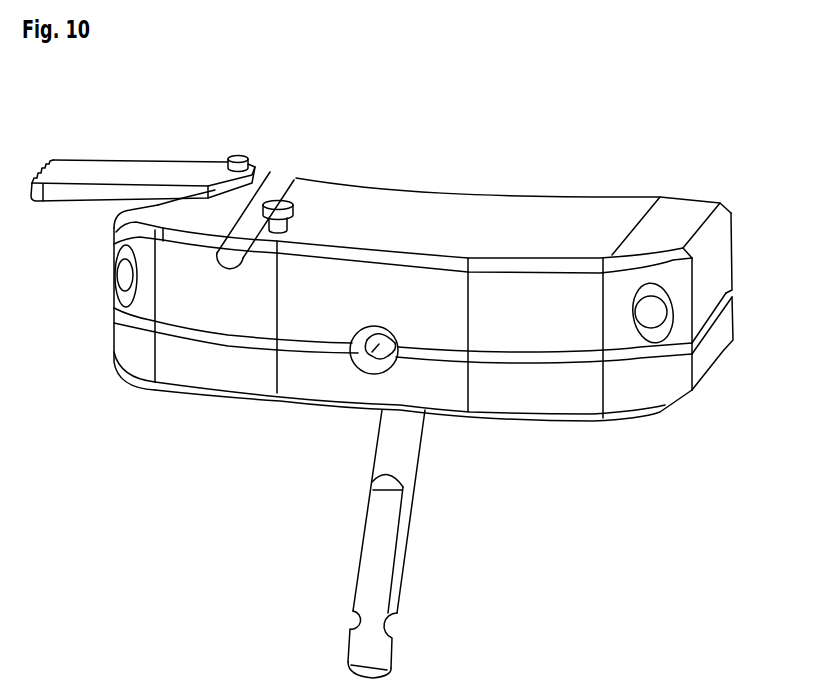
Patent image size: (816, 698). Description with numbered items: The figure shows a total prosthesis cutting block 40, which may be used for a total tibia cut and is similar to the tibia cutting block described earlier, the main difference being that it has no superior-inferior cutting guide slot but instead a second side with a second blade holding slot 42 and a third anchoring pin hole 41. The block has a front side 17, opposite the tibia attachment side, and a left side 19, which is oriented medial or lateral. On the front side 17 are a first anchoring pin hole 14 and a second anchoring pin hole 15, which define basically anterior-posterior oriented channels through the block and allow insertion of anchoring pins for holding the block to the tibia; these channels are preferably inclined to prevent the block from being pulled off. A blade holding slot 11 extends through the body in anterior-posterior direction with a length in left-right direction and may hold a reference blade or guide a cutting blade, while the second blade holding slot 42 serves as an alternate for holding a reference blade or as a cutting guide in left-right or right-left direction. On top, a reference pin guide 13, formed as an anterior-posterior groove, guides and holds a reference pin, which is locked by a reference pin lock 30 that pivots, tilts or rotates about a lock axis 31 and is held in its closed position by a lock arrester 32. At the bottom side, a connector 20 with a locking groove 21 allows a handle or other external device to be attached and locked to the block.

The blade holding slot 11 is at (228, 335).
The reference pin guide 13 is at (285, 197).
The first anchoring pin hole 14 is at (370, 377).
The second anchoring pin hole 15 is at (122, 277).
The front side 17 is at (338, 310).
The left side 19 is at (717, 268).
The connector 20 is at (421, 544).
The locking groove 21 is at (398, 630).
The reference pin lock 30 is at (107, 177).
The lock axis 31 is at (237, 155).
The lock arrester 32 is at (290, 200).
The total prosthesis cutting block 40 is at (545, 185).
The third anchoring pin hole 41 is at (650, 310).
The second blade holding slot 42 is at (555, 357).